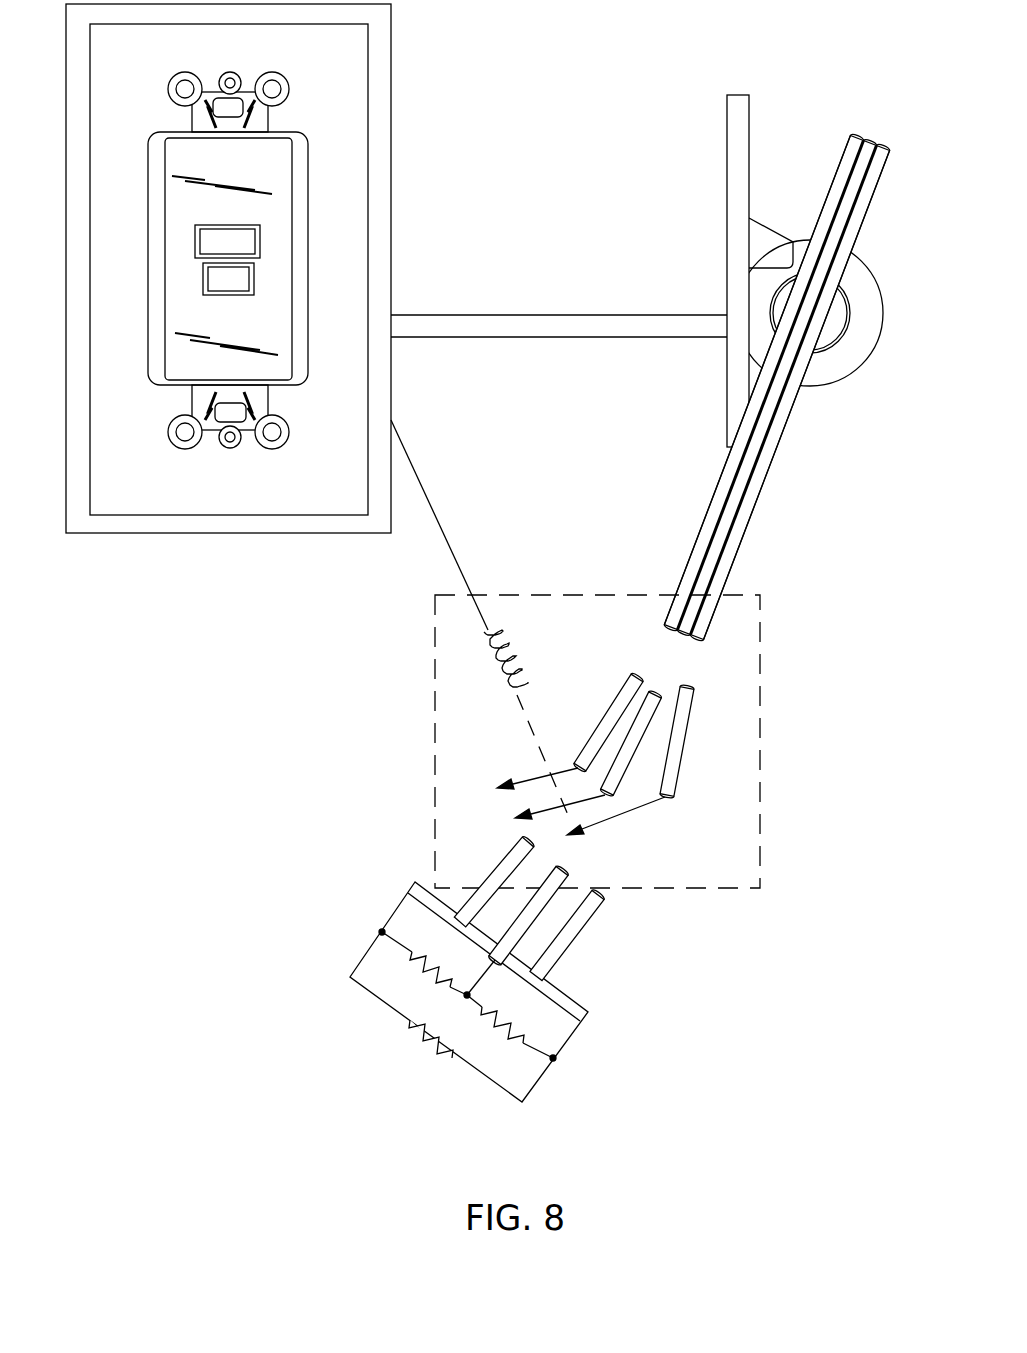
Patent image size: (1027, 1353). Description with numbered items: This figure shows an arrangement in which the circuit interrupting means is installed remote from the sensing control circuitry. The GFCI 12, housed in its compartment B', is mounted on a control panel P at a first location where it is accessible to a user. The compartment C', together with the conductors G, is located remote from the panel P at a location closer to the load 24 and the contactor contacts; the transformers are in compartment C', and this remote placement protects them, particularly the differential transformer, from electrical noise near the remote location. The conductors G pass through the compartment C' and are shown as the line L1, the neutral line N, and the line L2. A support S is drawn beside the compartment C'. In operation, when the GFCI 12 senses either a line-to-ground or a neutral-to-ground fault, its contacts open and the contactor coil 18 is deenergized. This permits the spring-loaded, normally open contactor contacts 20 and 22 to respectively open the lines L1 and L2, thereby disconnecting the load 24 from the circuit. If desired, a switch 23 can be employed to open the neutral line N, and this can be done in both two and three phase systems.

The control panel P is at (391, 192).
The GFCI 12 is at (302, 260).
The compartment B' is at (302, 258).
The wall stud / support S is at (727, 178).
The compartment C' is at (810, 337).
The conductors G is at (791, 352).
The line L1 is at (858, 139).
The neutral line N is at (872, 142).
The line L2 is at (887, 148).
The contactor coil 18 is at (520, 658).
The contactor contact 20 is at (530, 781).
The contactor contact 22 is at (628, 815).
The switch 23 is at (547, 805).
The load 24 is at (527, 1072).